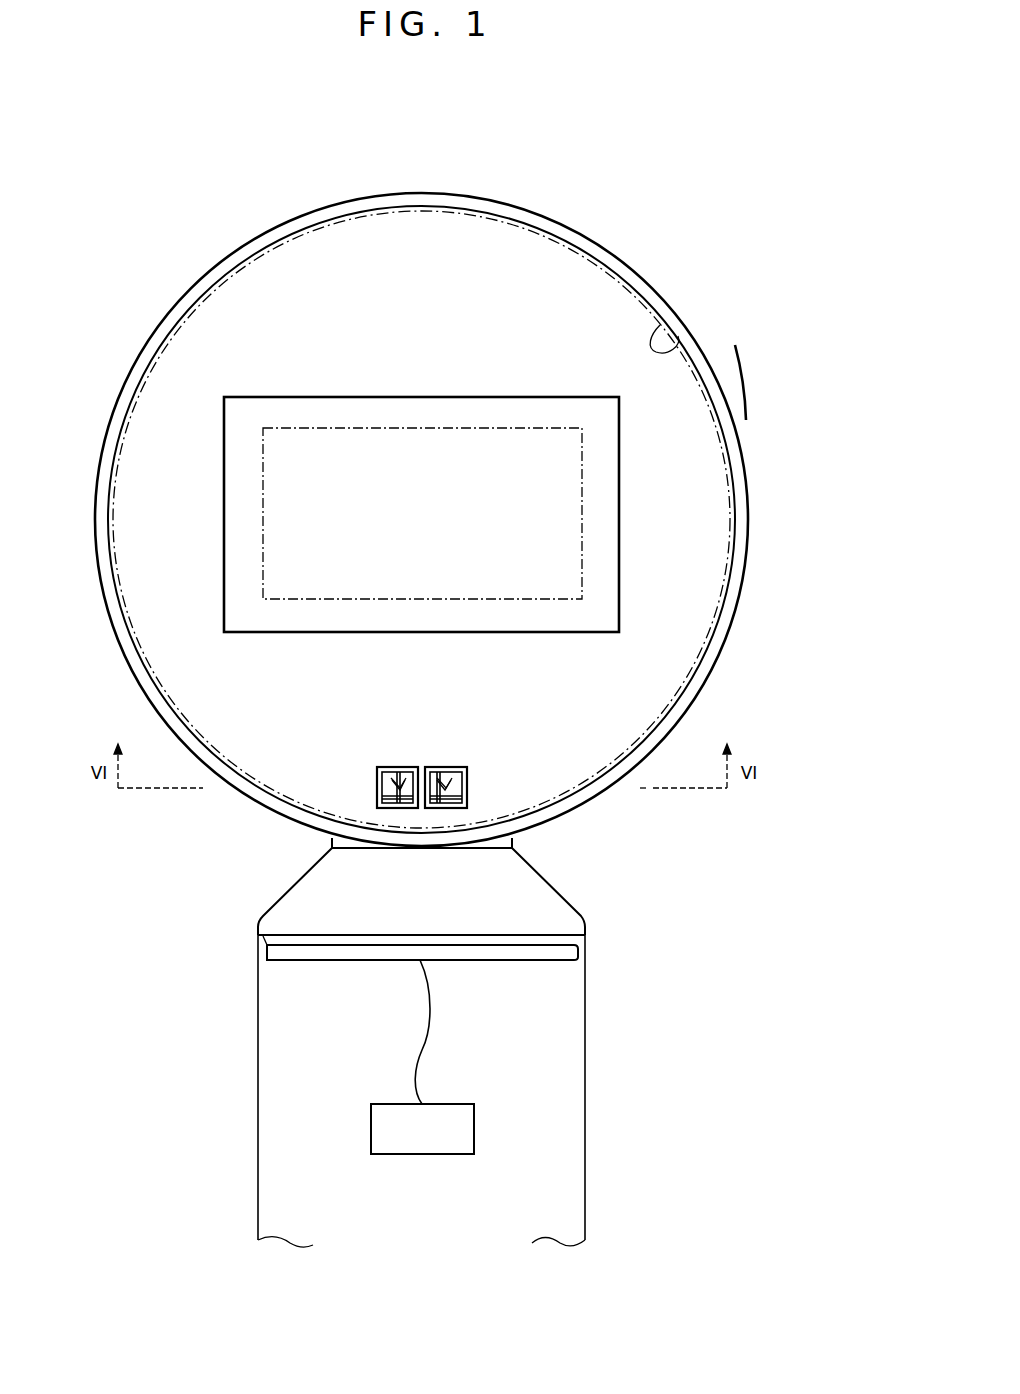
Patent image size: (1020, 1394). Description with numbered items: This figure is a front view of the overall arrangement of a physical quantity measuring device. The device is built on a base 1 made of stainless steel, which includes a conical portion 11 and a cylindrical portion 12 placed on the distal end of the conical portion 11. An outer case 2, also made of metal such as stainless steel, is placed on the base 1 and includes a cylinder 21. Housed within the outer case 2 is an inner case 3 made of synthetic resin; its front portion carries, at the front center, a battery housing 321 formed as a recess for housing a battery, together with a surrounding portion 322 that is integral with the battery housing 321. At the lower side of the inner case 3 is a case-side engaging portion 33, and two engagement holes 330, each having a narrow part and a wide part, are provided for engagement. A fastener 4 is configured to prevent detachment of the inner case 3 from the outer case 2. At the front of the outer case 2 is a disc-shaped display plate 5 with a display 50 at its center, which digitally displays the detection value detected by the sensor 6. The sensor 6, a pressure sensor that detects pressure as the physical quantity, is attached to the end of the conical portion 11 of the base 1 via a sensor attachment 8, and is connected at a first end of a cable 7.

The base 1 is at (642, 918).
The outer case 2 is at (613, 246).
The cylinder 21 is at (718, 376).
The inner case 3 is at (411, 245).
The battery housing 321 is at (433, 410).
The surrounding portion 322 is at (503, 255).
The display plate 5 is at (660, 325).
The display 50 is at (583, 533).
The case-side engaging portion 33 is at (385, 788).
The engagement holes 330 is at (402, 769).
The fastener 4 is at (460, 788).
The cylindrical portion 12 is at (320, 838).
The conical portion 11 is at (294, 892).
The sensor attachment 8 is at (588, 1105).
The cable 7 is at (422, 1037).
The sensor 6 is at (458, 1132).